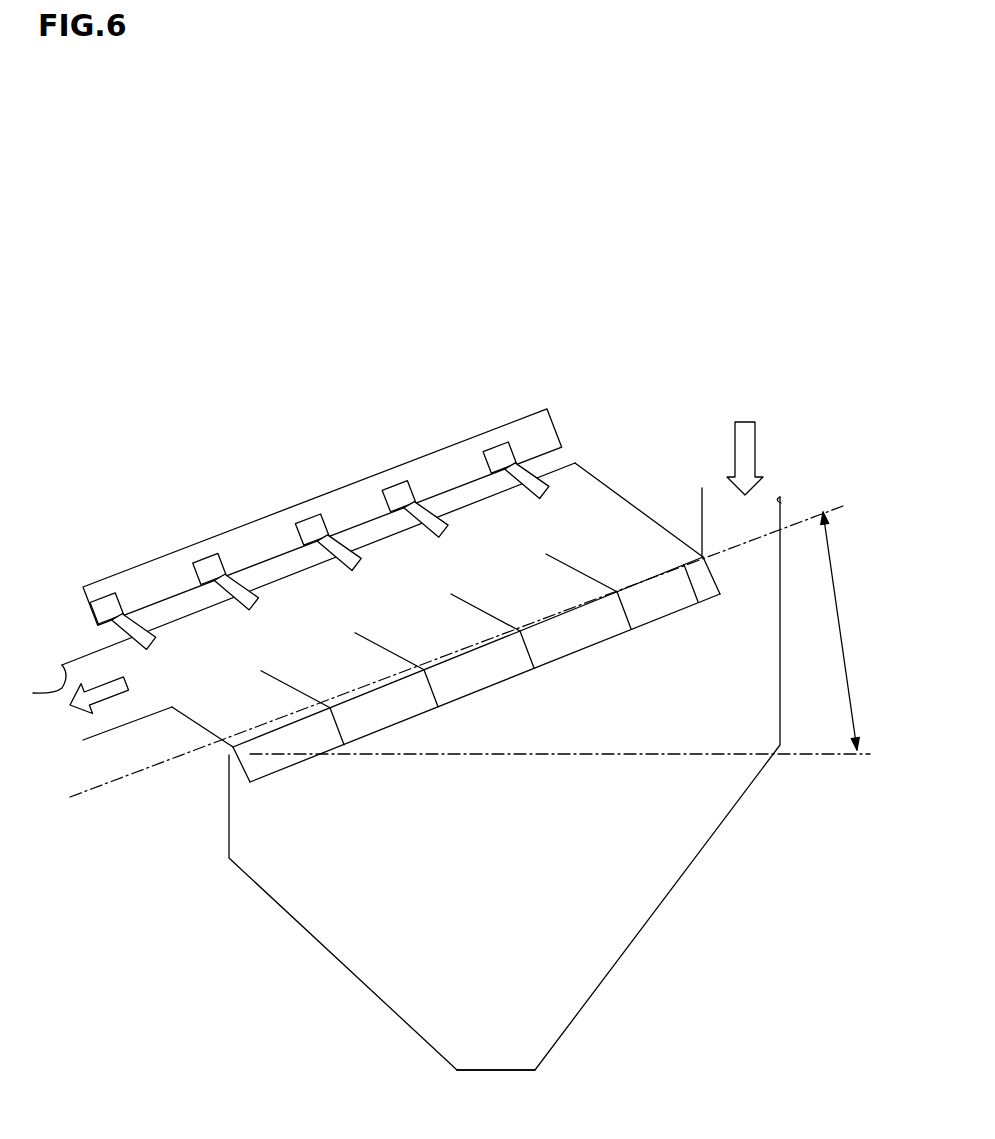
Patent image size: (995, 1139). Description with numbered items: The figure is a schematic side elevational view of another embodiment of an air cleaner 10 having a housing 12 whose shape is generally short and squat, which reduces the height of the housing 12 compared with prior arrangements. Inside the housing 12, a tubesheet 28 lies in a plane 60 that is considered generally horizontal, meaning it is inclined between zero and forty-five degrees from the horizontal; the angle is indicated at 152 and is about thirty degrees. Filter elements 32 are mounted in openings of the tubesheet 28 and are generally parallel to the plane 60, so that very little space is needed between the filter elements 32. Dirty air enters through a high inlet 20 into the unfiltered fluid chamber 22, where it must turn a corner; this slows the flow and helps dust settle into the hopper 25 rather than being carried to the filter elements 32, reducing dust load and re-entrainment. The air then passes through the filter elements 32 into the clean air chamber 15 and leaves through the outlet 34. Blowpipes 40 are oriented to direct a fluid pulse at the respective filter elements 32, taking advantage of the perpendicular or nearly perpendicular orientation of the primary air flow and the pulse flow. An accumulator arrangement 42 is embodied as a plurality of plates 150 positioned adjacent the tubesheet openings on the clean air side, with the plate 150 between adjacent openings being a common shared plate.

The air cleaner 10 is at (702, 305).
The housing 12 is at (668, 892).
The clean air chamber 15 is at (619, 491).
The air inlet 20 is at (778, 492).
The unfiltered fluid chamber 22 is at (308, 934).
The hopper 25 is at (412, 1025).
The tubesheet 28 is at (692, 598).
The filter elements 32 is at (282, 760).
The outlet 34 is at (67, 692).
The blowpipes 40 is at (156, 640).
The accumulator arrangement 42 is at (252, 676).
The plane 60 is at (843, 508).
The plates 150 is at (193, 721).
The angle 152 is at (842, 597).